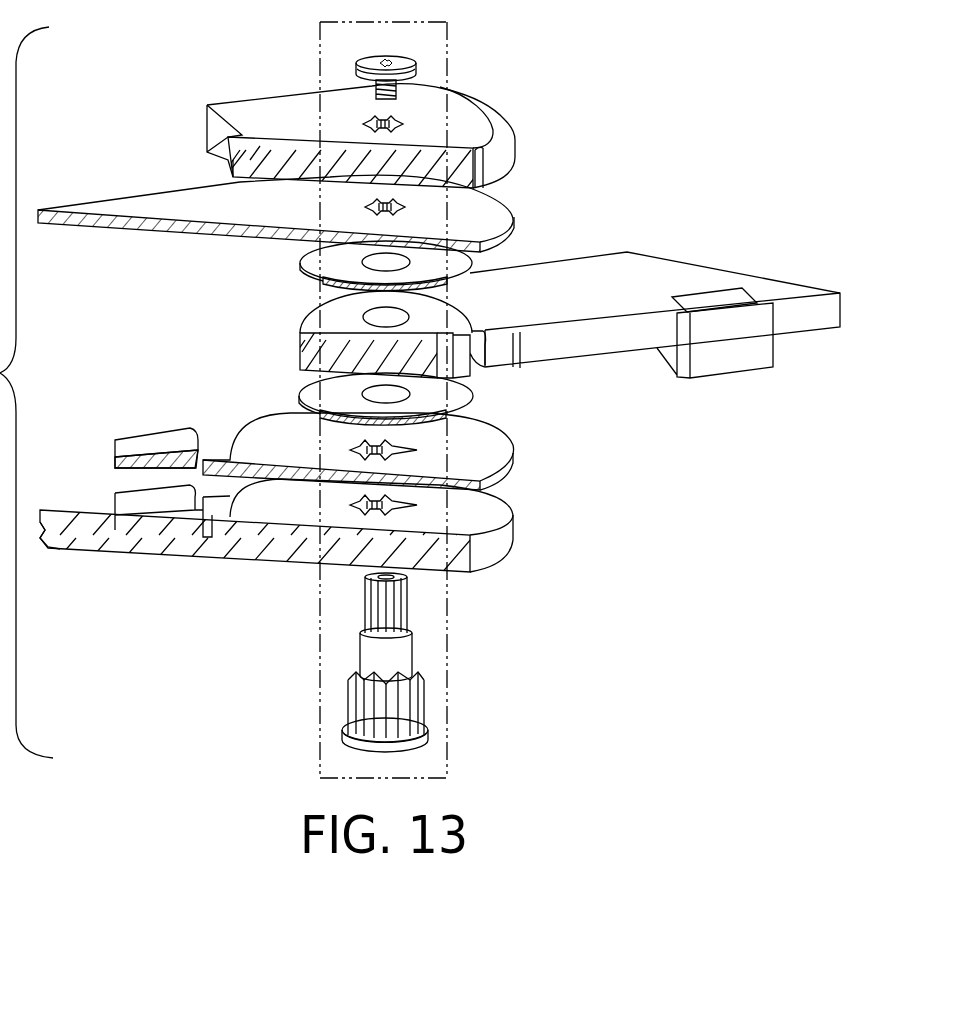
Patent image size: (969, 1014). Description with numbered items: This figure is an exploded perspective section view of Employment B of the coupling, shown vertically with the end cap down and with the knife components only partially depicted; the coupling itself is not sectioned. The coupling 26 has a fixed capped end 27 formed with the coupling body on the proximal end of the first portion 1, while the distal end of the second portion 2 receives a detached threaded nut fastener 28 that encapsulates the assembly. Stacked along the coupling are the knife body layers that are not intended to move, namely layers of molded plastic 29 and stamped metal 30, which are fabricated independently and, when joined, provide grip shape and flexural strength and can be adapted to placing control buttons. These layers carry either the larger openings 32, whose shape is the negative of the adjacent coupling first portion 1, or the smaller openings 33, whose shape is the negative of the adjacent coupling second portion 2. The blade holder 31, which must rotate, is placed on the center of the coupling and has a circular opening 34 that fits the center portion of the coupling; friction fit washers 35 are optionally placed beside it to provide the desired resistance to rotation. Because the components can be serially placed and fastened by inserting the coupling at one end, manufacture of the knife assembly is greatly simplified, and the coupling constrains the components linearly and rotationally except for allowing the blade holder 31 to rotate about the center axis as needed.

The first portion 1 is at (402, 708).
The second portion 2 is at (395, 610).
The coupling 26 is at (383, 659).
The fixed capped end 27 is at (428, 735).
The threaded nut fastener 28 is at (372, 57).
The knife body layers of molded plastic 29 is at (283, 128).
The knife body layers of stamped metal 30 is at (190, 203).
The blade holder 31 is at (593, 290).
The larger openings 32 is at (417, 443).
The smaller openings 33 is at (397, 117).
The circular opening 34 is at (383, 325).
The friction fit washers 35 is at (335, 265).